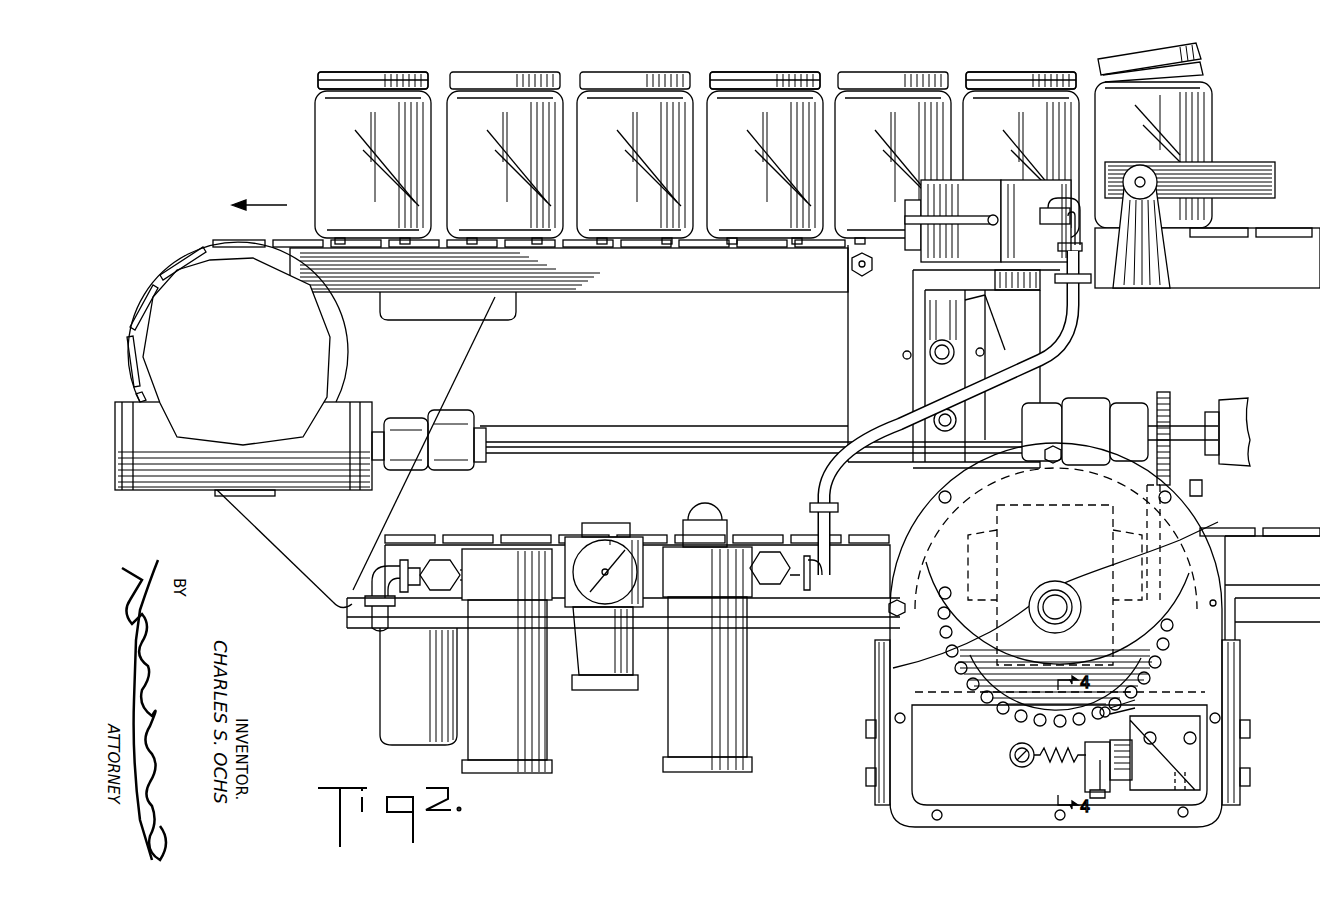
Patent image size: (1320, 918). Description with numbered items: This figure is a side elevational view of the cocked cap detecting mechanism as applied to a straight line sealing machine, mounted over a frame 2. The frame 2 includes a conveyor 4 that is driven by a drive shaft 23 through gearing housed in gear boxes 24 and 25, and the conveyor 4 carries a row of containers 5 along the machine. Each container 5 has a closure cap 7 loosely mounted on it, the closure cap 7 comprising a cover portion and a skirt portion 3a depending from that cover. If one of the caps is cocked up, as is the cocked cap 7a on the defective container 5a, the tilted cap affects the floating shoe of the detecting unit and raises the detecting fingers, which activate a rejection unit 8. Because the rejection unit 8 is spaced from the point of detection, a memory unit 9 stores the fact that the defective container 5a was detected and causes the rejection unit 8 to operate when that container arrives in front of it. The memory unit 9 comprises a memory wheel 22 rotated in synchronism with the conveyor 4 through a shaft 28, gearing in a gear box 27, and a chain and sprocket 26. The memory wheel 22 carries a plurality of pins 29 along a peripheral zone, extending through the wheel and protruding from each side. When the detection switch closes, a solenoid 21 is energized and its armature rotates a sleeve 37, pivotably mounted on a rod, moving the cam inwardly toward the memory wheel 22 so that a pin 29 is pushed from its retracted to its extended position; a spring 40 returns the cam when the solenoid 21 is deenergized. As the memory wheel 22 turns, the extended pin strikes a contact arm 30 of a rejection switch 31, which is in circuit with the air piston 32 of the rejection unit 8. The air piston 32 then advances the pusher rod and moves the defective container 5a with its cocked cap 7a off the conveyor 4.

The frame 2 is at (672, 300).
The skirt portion 3a is at (322, 83).
The conveyor 4 is at (228, 243).
The containers 5 is at (384, 129).
The defective container 5a is at (1172, 121).
The closure cap 7 is at (374, 72).
The cocked cap 7a is at (1185, 50).
The rejection unit 8 is at (910, 262).
The memory unit 9 is at (1228, 516).
The solenoid 21 is at (1126, 776).
The memory wheel 22 is at (978, 728).
The drive shaft 23 is at (630, 438).
The gear box 24 is at (345, 408).
The gear box 25 is at (328, 350).
The chain and sprocket 26 is at (1165, 394).
The gear box 27 is at (1059, 597).
The shaft 28 is at (1055, 581).
The pins 29 is at (962, 662).
The contact arm 30 is at (1140, 705).
The rejection switch 31 is at (1130, 710).
The air piston 32 is at (1022, 185).
The sleeve 37 is at (1022, 745).
The spring 40 is at (1052, 764).